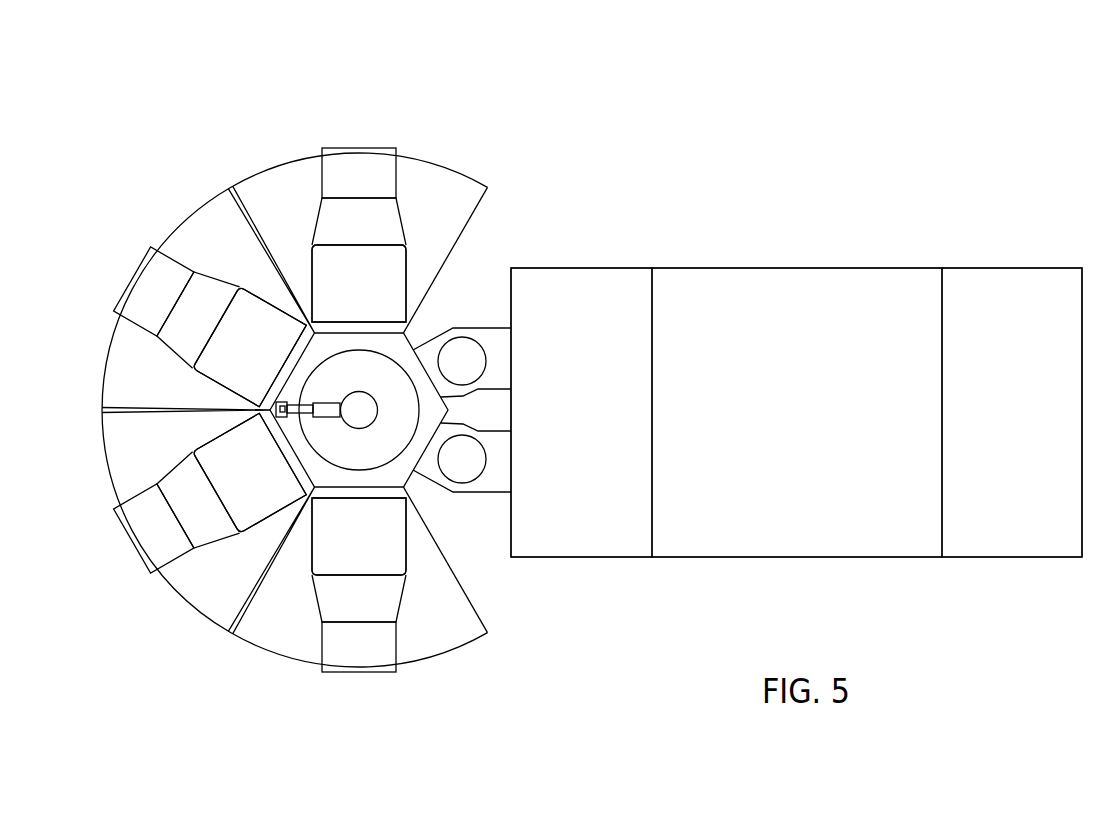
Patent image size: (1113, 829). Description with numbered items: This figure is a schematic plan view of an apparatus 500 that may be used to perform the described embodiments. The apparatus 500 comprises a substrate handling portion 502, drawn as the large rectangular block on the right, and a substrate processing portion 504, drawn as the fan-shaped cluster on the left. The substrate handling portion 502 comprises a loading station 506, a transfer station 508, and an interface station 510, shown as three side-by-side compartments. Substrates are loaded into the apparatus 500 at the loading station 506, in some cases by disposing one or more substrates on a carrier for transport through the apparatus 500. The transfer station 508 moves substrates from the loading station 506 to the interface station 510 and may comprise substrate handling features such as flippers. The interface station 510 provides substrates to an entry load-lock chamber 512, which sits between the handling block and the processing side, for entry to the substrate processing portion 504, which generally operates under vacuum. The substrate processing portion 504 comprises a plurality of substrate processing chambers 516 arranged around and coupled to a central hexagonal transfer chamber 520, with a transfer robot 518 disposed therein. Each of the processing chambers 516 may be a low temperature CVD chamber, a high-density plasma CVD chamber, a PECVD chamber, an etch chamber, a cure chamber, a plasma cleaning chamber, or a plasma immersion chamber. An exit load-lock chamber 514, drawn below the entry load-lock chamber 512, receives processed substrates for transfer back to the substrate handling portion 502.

The apparatus 500 is at (232, 120).
The substrate handling portion 502 is at (867, 237).
The substrate processing portion 504 is at (187, 630).
The loading station 506 is at (1038, 417).
The transfer station 508 is at (815, 417).
The interface station 510 is at (609, 417).
The entry load-lock chamber 512 is at (495, 326).
The exit load-lock chamber 514 is at (408, 478).
The substrate processing chambers 516 is at (190, 213).
The transfer robot 518 is at (322, 403).
The transfer chamber 520 is at (407, 340).